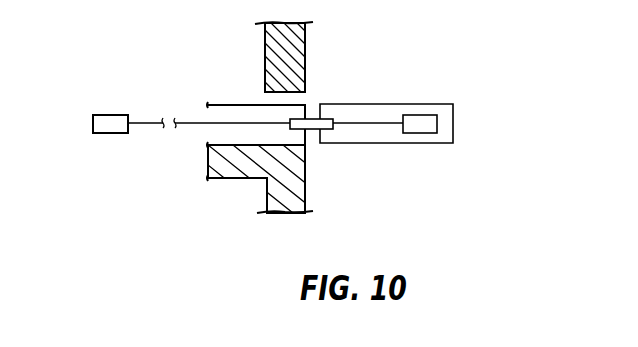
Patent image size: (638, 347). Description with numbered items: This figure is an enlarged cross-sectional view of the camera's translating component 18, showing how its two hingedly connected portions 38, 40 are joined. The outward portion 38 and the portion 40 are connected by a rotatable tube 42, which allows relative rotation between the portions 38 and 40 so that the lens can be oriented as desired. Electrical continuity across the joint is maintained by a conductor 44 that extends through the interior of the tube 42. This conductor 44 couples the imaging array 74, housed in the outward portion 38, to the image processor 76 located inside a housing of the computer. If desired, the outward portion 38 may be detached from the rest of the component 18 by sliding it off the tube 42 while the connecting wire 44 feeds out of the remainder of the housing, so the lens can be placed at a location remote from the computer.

The translating component 18 is at (455, 50).
The outward portion 38 is at (447, 118).
The portion 40 is at (240, 123).
The rotatable tube 42 is at (328, 118).
The conductor 44 is at (362, 123).
The imaging array 74 is at (423, 127).
The image processor 76 is at (107, 122).